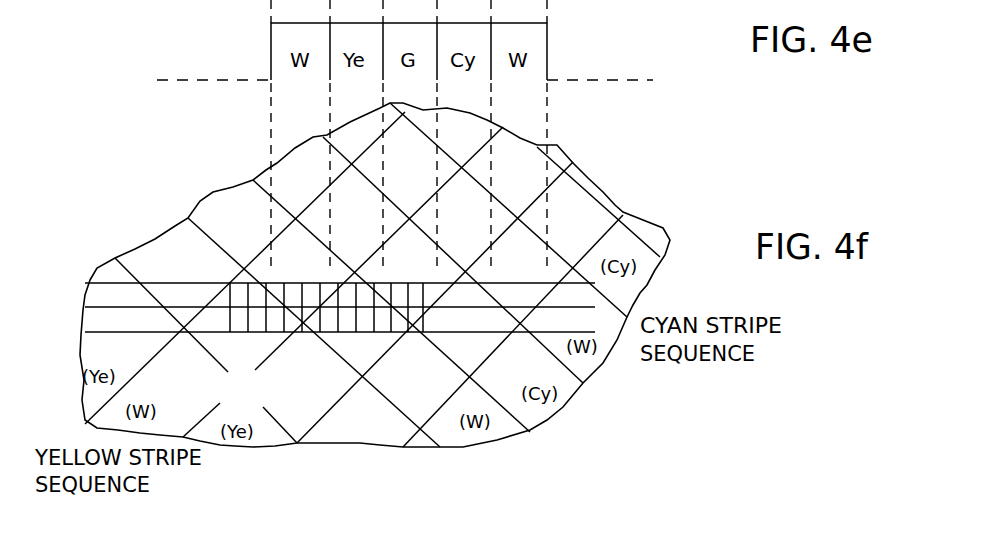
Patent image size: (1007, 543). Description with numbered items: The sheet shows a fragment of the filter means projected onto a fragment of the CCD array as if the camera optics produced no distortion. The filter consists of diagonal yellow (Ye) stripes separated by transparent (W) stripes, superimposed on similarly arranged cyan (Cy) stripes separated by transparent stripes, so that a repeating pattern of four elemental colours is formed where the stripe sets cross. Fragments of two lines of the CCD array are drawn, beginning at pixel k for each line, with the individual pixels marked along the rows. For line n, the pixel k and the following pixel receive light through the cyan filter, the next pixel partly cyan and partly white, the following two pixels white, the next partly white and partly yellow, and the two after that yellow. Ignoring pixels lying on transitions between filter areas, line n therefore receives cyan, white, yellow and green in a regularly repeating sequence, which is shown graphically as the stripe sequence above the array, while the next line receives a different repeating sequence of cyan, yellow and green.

The line n of the CCD array n is at (340, 295).
The kth pixel k is at (232, 333).